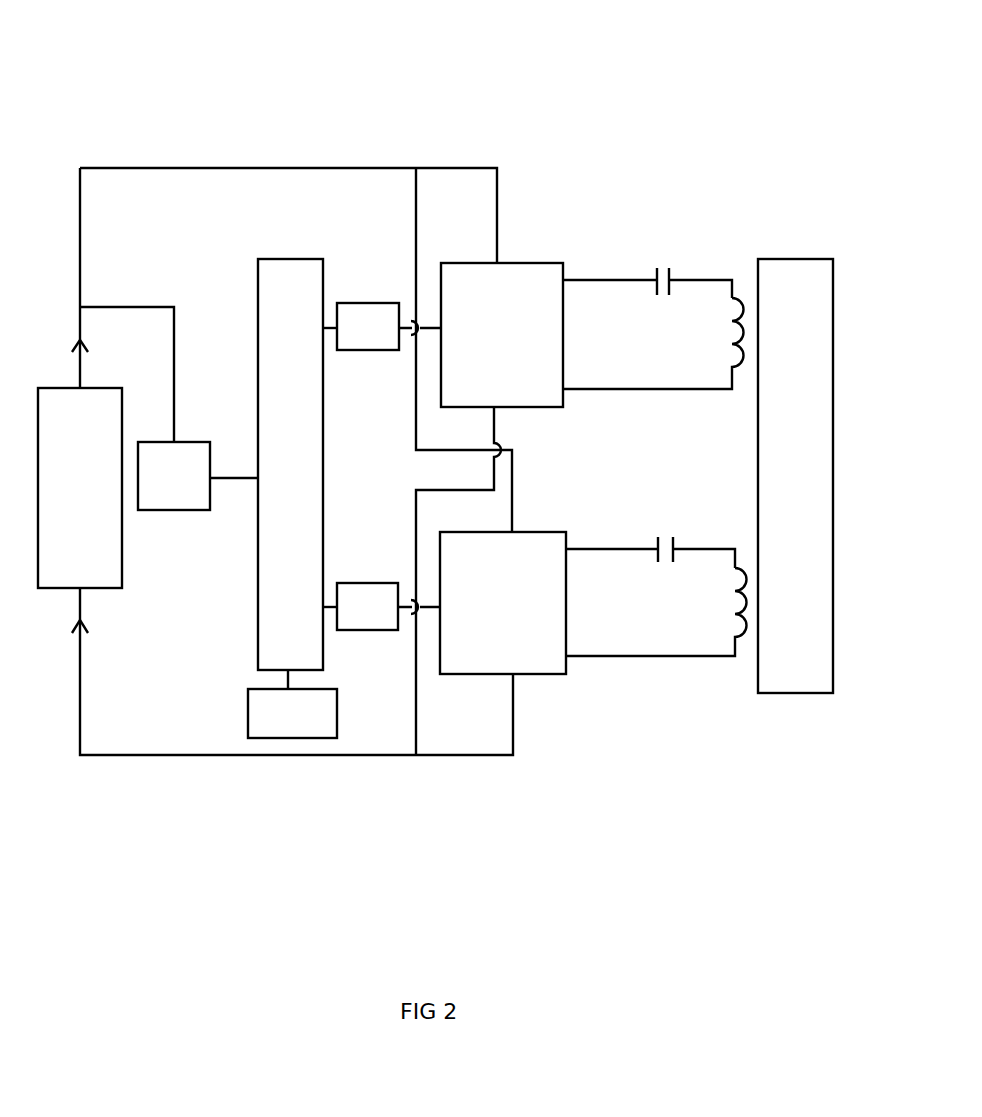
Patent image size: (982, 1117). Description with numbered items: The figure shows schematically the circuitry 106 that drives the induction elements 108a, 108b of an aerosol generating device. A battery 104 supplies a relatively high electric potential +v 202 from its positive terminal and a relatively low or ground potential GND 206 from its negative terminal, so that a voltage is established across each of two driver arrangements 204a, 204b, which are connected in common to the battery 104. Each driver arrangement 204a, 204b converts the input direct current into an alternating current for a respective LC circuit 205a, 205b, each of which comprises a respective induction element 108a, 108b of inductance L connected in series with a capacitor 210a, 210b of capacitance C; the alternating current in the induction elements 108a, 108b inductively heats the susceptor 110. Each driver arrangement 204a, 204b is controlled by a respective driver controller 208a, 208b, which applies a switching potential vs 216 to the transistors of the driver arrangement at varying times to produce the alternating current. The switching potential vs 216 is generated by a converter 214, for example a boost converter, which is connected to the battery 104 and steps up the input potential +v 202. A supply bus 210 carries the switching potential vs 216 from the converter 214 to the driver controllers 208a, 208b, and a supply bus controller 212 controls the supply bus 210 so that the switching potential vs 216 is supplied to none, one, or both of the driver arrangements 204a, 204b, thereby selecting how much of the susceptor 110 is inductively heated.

The circuitry 106 is at (592, 73).
The battery 104 is at (102, 500).
The electric potential +v 202 is at (118, 278).
The electric potential GND 206 is at (128, 619).
The converter 214 is at (195, 487).
The switching potential vs 216 is at (238, 478).
The supply bus 210 is at (310, 492).
The supply bus controller 212 is at (311, 728).
The first driver controller 208a is at (396, 342).
The second driver controller 208b is at (396, 618).
The first driver arrangement 204a is at (529, 350).
The second driver arrangement 204b is at (531, 620).
The first capacitor 210a is at (647, 265).
The second capacitor 210b is at (650, 535).
The first induction element 108a is at (653, 343).
The second induction element 108b is at (656, 612).
The first LC circuit 205a is at (653, 354).
The second LC circuit 205b is at (656, 617).
The susceptor 110 is at (819, 493).